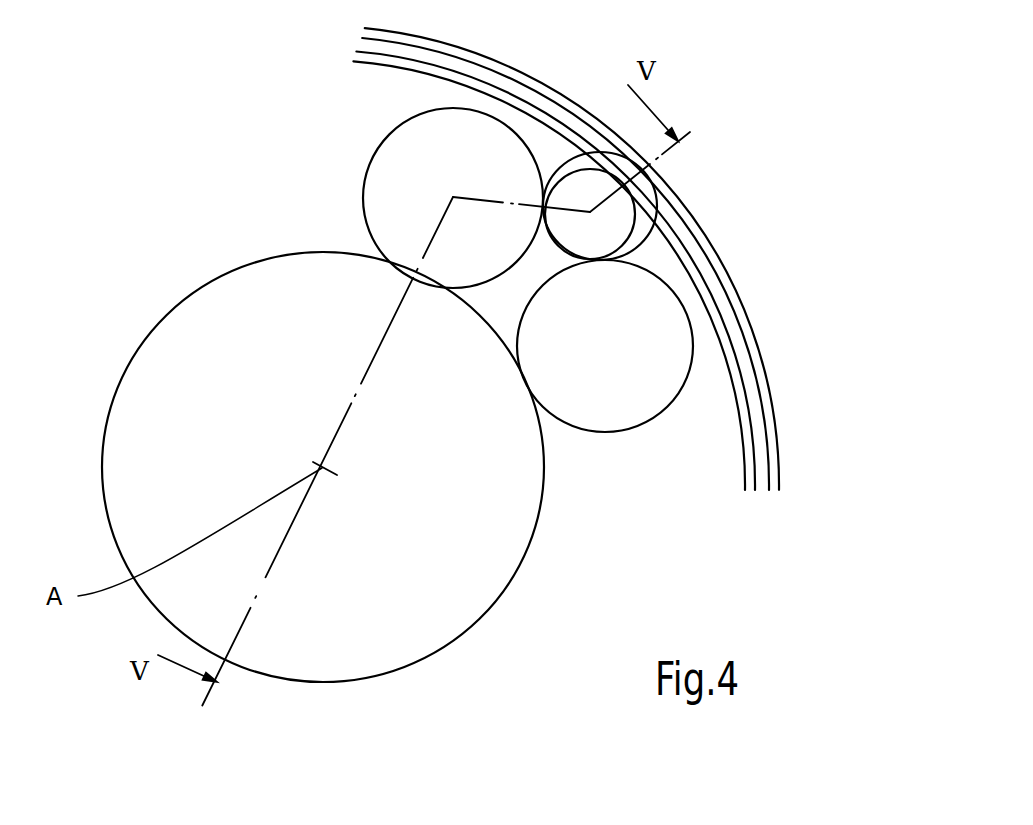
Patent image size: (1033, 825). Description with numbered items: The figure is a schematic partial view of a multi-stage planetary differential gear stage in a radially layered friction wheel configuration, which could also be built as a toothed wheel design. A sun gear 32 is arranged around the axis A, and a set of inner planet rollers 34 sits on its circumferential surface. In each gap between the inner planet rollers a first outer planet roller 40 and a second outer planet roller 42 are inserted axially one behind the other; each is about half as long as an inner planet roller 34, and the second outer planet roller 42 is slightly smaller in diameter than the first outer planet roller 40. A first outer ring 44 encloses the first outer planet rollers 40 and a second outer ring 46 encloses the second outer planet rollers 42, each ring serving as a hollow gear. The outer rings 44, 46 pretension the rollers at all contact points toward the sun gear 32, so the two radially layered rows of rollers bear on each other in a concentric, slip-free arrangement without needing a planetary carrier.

The sun gear 32 is at (503, 595).
The inner planet roller 34 is at (633, 430).
The first outer planet roller 40 is at (610, 153).
The second outer planet roller 42 is at (581, 172).
The first outer ring 44 is at (762, 302).
The second outer ring 46 is at (702, 243).